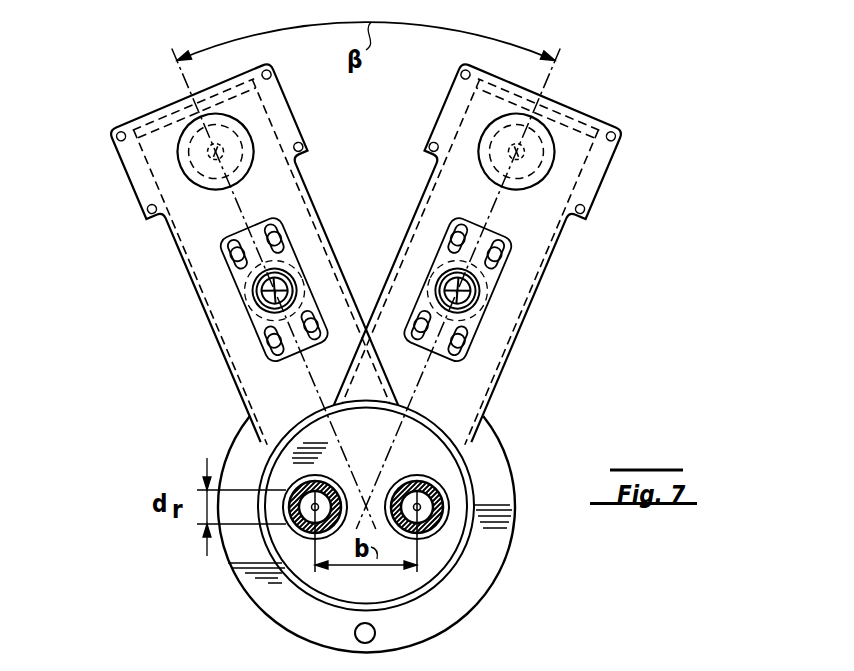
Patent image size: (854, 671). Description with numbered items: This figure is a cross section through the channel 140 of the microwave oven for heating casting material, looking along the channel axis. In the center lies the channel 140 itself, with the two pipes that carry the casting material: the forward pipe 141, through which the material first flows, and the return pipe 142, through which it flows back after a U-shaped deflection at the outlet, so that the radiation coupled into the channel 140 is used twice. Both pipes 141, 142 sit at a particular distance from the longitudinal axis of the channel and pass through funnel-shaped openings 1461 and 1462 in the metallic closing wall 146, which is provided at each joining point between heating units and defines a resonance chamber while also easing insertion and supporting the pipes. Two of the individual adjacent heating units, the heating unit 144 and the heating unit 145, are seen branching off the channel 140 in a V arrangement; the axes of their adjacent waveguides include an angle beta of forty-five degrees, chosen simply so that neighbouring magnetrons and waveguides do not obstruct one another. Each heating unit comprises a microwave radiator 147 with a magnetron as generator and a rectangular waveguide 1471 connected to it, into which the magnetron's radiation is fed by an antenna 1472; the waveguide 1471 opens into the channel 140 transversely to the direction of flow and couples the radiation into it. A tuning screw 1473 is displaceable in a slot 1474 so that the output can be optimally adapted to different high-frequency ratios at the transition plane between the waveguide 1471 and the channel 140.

The channel 140 is at (506, 588).
The forward pipe 141 is at (448, 497).
The return pipe 142 is at (296, 540).
The heating unit 144 is at (200, 303).
The heating unit 145 is at (547, 283).
The closing wall 146 is at (270, 538).
The microwave radiator 147 is at (178, 158).
The funnel-shaped opening 1461 is at (447, 525).
The funnel-shaped opening 1462 is at (292, 478).
The waveguide 1471 is at (247, 367).
The antenna 1472 is at (158, 103).
The tuning screw 1473 is at (290, 278).
The slot 1474 is at (296, 310).